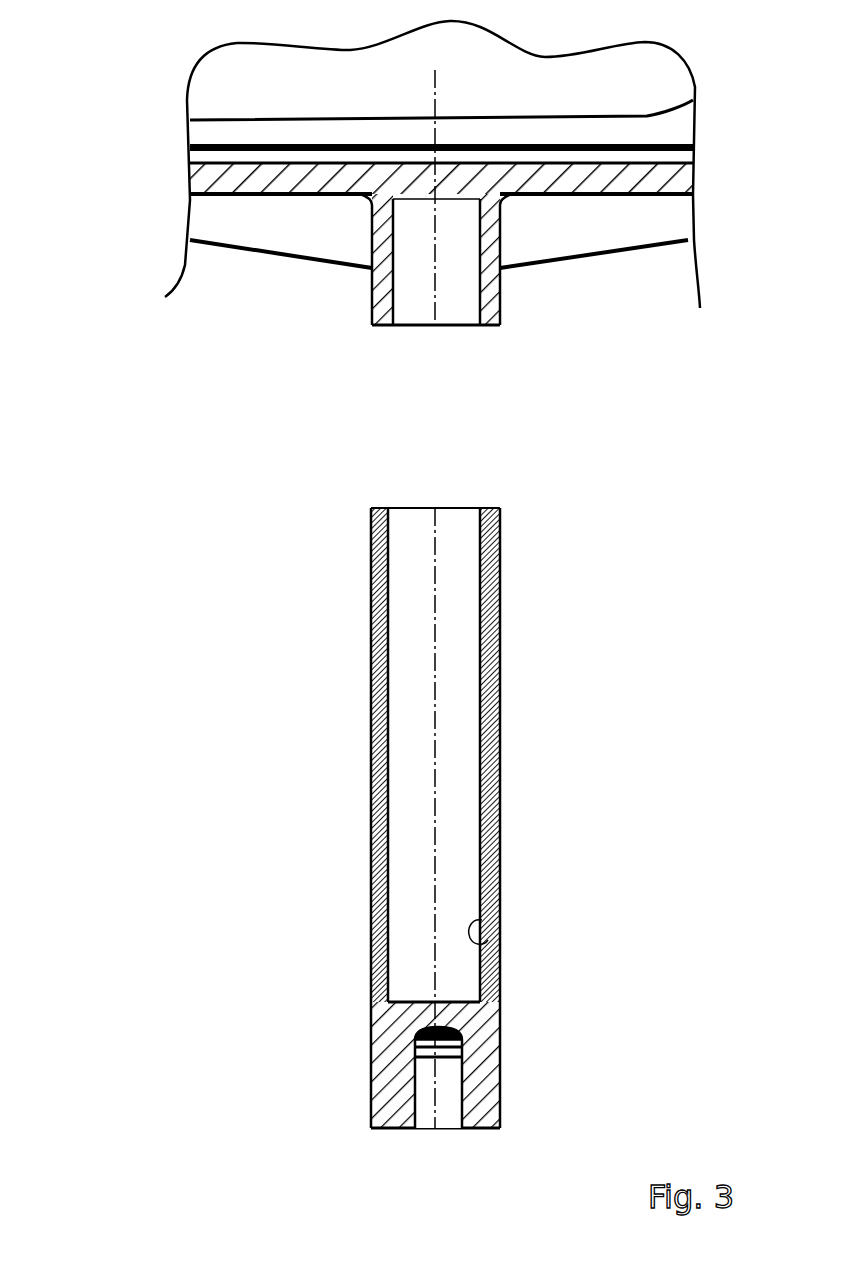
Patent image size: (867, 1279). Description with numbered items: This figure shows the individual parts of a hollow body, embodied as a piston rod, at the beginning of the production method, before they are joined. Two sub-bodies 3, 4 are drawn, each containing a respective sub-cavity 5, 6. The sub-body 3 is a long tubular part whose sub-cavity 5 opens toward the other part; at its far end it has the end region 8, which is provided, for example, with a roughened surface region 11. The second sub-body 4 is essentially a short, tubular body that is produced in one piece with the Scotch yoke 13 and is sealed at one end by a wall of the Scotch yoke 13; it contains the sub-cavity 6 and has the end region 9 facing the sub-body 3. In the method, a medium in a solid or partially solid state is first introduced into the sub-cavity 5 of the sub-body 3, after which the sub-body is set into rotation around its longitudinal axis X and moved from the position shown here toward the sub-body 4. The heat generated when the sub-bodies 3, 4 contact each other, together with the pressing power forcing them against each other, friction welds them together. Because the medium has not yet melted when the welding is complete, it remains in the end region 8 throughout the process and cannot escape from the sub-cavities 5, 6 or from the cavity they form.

The Scotch yoke 13 is at (206, 135).
The end region 9 is at (455, 238).
The sub-cavity 6 is at (455, 293).
The second sub-body 4 is at (372, 310).
The sub-body 3 is at (500, 598).
The sub-cavity 5 is at (457, 728).
The roughened surface region 11 is at (497, 905).
The end region 8 is at (463, 985).
The longitudinal axis X is at (430, 815).